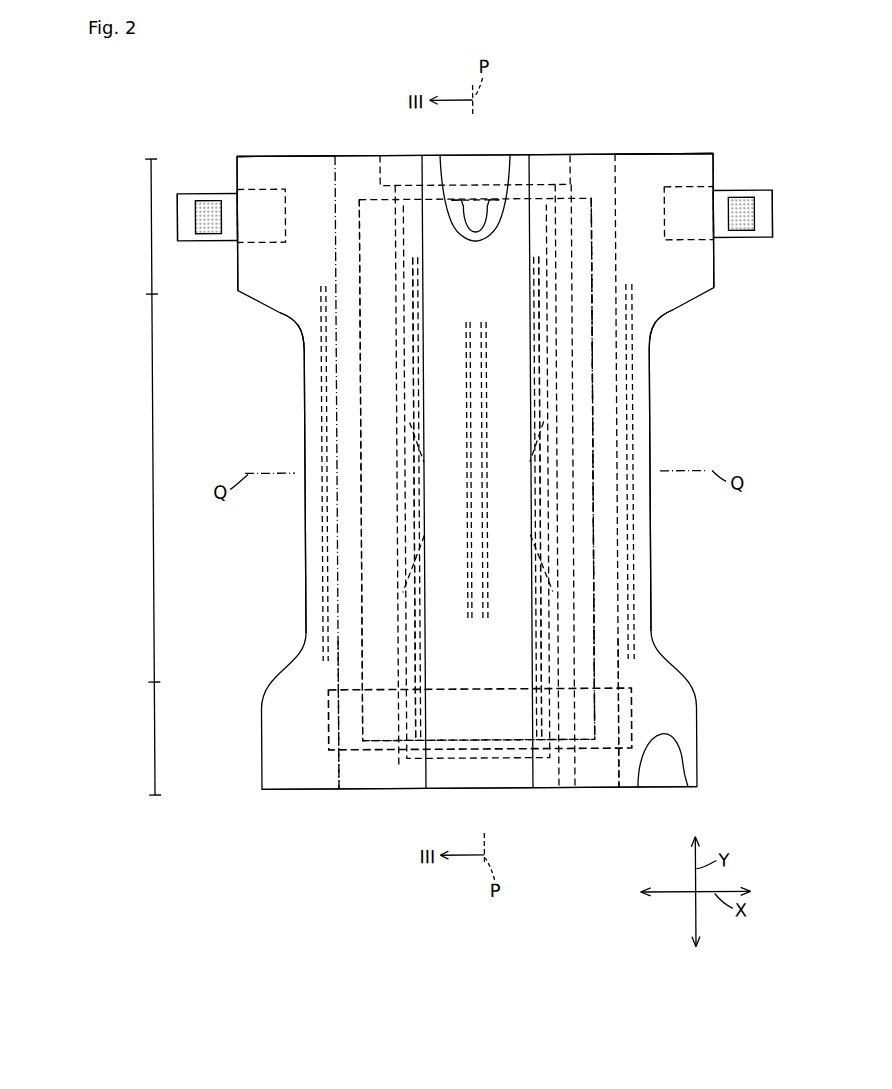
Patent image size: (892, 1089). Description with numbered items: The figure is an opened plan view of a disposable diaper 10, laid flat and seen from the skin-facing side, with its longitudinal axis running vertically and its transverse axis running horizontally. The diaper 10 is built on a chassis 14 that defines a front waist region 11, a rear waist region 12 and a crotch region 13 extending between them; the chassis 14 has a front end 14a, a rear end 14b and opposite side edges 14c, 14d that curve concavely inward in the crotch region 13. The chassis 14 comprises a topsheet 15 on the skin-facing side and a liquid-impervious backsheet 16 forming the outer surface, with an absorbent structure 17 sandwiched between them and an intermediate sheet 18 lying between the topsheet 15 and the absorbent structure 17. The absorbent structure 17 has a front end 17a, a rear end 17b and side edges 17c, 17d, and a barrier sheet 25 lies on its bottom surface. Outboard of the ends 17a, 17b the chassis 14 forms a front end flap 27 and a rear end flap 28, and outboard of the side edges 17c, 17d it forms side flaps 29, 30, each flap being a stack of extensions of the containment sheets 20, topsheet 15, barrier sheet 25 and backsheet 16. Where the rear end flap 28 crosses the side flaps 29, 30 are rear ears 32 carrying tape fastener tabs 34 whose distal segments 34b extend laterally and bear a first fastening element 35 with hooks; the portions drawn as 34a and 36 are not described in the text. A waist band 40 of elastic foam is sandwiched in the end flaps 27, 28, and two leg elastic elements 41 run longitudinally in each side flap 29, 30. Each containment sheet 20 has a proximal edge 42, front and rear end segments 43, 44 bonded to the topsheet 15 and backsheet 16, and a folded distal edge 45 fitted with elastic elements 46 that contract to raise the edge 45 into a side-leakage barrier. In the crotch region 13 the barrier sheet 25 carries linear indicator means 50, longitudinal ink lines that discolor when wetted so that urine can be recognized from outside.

The diaper 10 is at (697, 108).
The front waist region 11 is at (156, 740).
The rear waist region 12 is at (151, 228).
The crotch region 13 is at (154, 488).
The chassis 14 is at (535, 153).
The front end 14a is at (373, 790).
The rear end 14b is at (276, 162).
The side edge 14c is at (303, 536).
The side edge 14d is at (652, 531).
The topsheet 15 is at (428, 165).
The liquid-impervious backsheet 16 is at (660, 772).
The absorbent structure 17 is at (518, 412).
The front end of absorbent structure 17a is at (462, 744).
The rear end of absorbent structure 17b is at (470, 228).
The side edge of absorbent structure 17c is at (414, 460).
The side edge of absorbent structure 17d is at (546, 462).
The intermediate sheet 18 is at (575, 206).
The containment sheet 20 is at (368, 168).
The barrier sheet 25 is at (476, 197).
The front end flap 27 is at (621, 784).
The rear end flap 28 is at (407, 184).
The side flap 29 is at (362, 408).
The side flap 30 is at (598, 490).
The rear ear 32 is at (262, 165).
The tape fastener tab 34 is at (186, 202).
The fixed portion of fastening tape 34a is at (273, 246).
The distal segment 34b is at (189, 237).
The first fastening element 35 is at (210, 228).
The target tape 36 is at (342, 722).
The waist band 40 is at (482, 168).
The leg elastic element 41 is at (327, 576).
The proximal edge 42 is at (304, 335).
The front end segment 43 is at (306, 772).
The rear end segment 44 is at (308, 170).
The distal edge 45 is at (385, 482).
The elastic element 46 is at (426, 604).
The linear indicator means 50 is at (482, 336).